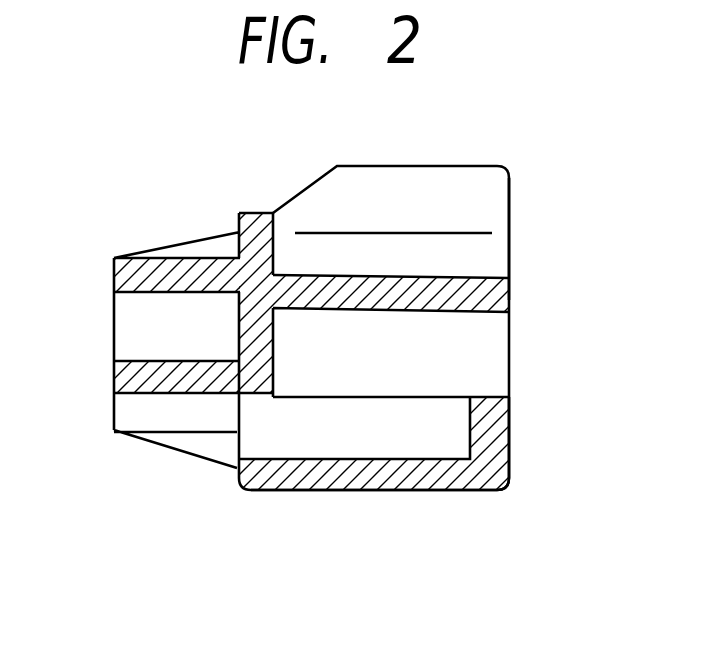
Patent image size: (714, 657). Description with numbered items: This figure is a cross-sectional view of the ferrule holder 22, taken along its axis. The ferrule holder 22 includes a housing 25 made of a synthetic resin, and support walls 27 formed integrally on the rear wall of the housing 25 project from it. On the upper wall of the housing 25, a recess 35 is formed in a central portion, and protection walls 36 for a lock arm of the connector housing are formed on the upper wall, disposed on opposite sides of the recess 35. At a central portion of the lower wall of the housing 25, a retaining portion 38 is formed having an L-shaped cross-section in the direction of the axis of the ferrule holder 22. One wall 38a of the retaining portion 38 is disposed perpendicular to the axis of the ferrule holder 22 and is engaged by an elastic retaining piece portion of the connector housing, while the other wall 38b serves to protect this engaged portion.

The ferrule holder 22 is at (365, 165).
The protection wall 36 is at (486, 190).
The housing 25 is at (520, 225).
The recess 35 is at (490, 257).
The support wall 27 is at (127, 327).
The wall of the retaining portion 38a is at (509, 422).
The other wall of the retaining portion 38b is at (268, 492).
The retaining portion 38 is at (460, 493).